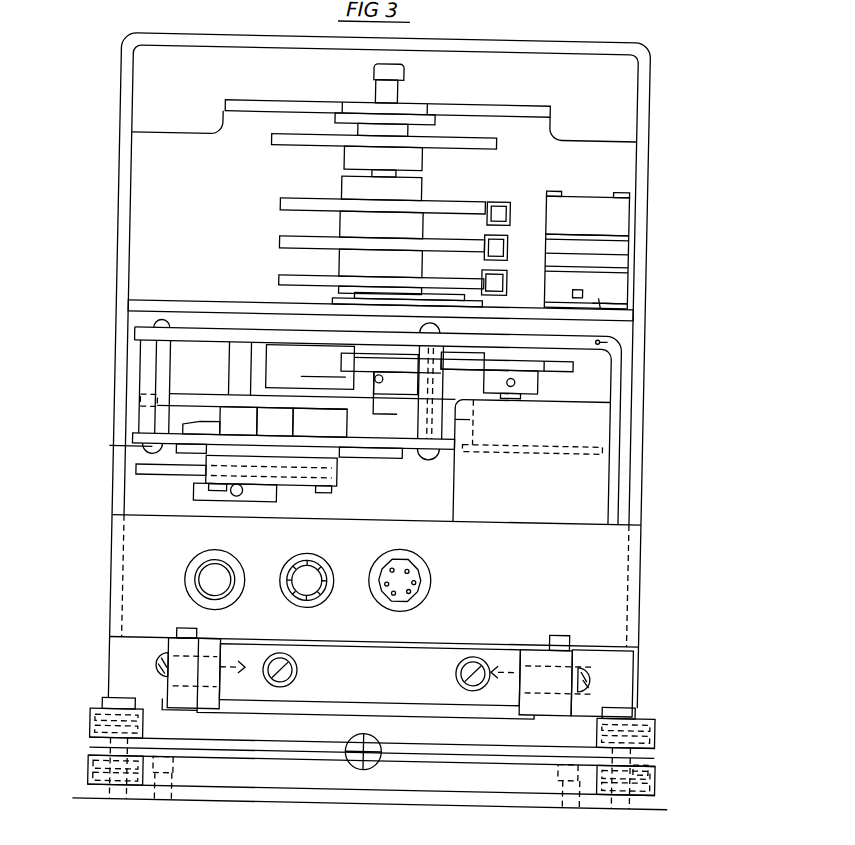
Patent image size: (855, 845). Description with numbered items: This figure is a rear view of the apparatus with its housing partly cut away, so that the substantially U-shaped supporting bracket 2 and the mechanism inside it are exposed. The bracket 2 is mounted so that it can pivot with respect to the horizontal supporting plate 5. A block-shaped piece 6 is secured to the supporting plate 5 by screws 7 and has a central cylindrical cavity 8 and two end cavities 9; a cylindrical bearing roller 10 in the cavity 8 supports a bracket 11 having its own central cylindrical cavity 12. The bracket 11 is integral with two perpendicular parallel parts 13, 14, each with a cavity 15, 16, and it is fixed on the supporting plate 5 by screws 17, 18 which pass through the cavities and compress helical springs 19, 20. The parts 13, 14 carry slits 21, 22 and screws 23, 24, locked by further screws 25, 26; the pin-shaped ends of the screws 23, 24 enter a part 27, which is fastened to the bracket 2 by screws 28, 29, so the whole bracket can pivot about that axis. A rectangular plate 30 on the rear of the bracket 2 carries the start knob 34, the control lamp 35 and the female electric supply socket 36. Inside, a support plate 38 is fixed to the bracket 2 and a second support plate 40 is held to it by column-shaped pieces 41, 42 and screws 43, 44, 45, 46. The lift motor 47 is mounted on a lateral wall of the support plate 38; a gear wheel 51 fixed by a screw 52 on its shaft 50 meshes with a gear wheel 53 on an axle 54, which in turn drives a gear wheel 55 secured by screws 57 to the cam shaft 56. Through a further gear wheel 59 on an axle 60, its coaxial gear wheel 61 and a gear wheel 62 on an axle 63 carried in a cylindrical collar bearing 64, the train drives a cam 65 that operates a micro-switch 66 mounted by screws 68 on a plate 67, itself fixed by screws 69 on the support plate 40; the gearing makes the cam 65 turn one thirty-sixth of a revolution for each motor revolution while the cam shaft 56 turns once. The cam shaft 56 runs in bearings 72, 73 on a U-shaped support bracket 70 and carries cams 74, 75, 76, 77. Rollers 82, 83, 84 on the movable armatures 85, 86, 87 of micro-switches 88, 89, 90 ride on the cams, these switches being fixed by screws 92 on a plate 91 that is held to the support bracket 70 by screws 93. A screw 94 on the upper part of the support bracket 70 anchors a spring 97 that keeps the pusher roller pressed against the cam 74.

The supporting bracket 2 is at (280, 40).
The supporting plate 5 is at (385, 805).
The block-shaped piece 6 is at (656, 766).
The screw 7 is at (563, 768).
The cylindrical cavity 8 is at (380, 766).
The cavity 9 is at (96, 777).
The cylindrical bearing roller 10 is at (388, 748).
The bracket 11 is at (325, 742).
The cylindrical cavity 12 is at (388, 751).
The parallel part 13 is at (580, 703).
The parallel part 14 is at (185, 711).
The cavity 15 is at (650, 731).
The cavity 16 is at (96, 730).
The screw 17 is at (630, 708).
The screw 18 is at (110, 704).
The helical spring 19 is at (640, 750).
The helical spring 20 is at (130, 752).
The slit 21 is at (560, 665).
The slit 22 is at (186, 668).
The screw 23 is at (596, 670).
The screw 24 is at (162, 670).
The screw 25 is at (566, 632).
The screw 26 is at (186, 632).
The part 27 is at (358, 696).
The screw 28 is at (461, 671).
The screw 29 is at (293, 682).
The rectangular plate 30 is at (340, 637).
The start knob 34 is at (228, 560).
The control lamp 35 is at (322, 560).
The female electric supply socket 36 is at (428, 568).
The support plate 38 is at (603, 339).
The support plate 40 is at (550, 445).
The column-shaped piece 41 is at (162, 362).
The column-shaped piece 42 is at (440, 430).
The screw 43 is at (159, 324).
The screw 44 is at (121, 446).
The screw 45 is at (455, 290).
The screw 46 is at (433, 456).
The lift motor 47 is at (515, 508).
The motor shaft 50 is at (515, 396).
The gear wheel 51 is at (525, 393).
The screw 52 is at (516, 380).
The gear wheel 53 is at (572, 362).
The axle 54 is at (474, 420).
The gear wheel 55 is at (360, 358).
The cam shaft 56 is at (380, 392).
The screw 57 is at (345, 378).
The gear wheel 59 is at (278, 386).
The axle 60 is at (372, 445).
The gear wheel 61 is at (385, 413).
The gear wheel 62 is at (320, 422).
The axle 63 is at (236, 384).
The cylindrical collar bearing 64 is at (275, 422).
The cam 65 is at (180, 476).
The micro-switch 66 is at (312, 490).
The plate 67 is at (350, 452).
The screw 68 is at (333, 493).
The screw 69 is at (220, 421).
The support bracket 70 is at (530, 103).
The bearing 72 is at (432, 116).
The bearing 73 is at (330, 298).
The cam 74 is at (491, 142).
The cam 75 is at (418, 186).
The cam 76 is at (340, 230).
The cam 77 is at (340, 268).
The roller 82 is at (494, 200).
The roller 83 is at (481, 245).
The roller 84 is at (480, 282).
The movable armature 85 is at (526, 212).
The movable armature 86 is at (518, 246).
The movable armature 87 is at (527, 284).
The micro-switch 88 is at (578, 224).
The micro-switch 89 is at (577, 261).
The micro-switch 90 is at (603, 292).
The plate 91 is at (617, 300).
The screw 92 is at (556, 192).
The screw 93 is at (598, 298).
The screw 94 is at (395, 66).
The spring 97 is at (369, 78).